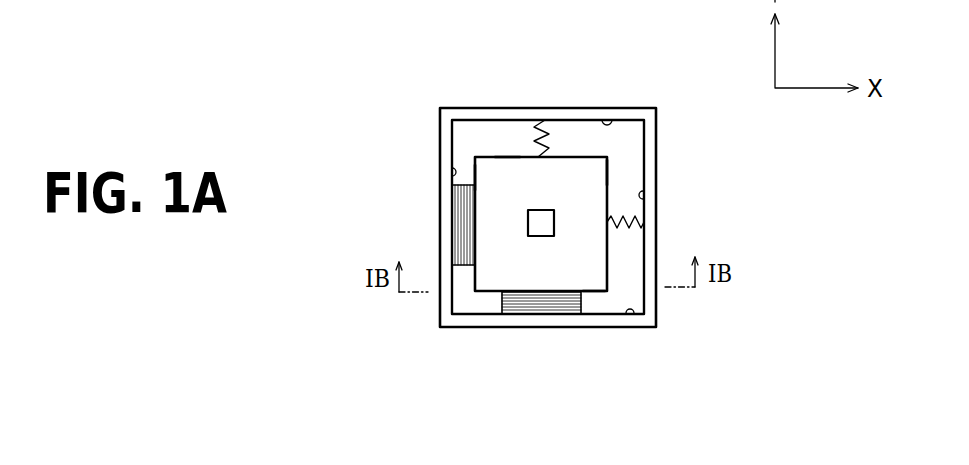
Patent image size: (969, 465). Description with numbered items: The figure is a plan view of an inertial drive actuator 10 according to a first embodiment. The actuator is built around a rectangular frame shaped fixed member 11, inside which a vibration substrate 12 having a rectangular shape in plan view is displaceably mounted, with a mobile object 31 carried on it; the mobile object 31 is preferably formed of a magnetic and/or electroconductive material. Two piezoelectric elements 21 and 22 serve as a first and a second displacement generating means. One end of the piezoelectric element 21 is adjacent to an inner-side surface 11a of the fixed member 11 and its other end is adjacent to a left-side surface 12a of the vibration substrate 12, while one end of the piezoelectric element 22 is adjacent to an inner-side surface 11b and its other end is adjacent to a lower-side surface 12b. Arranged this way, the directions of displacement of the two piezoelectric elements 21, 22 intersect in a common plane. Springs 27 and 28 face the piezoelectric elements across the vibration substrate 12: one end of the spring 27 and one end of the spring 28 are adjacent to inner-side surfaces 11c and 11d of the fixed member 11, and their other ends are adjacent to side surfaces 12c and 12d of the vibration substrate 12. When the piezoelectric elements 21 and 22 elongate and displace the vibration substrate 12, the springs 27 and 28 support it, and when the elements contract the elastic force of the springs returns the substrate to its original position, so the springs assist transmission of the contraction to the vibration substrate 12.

The inertial drive actuator 10 is at (560, 441).
The fixed member 11 is at (445, 137).
The inner-side surface 11a is at (452, 168).
The inner-side surface 11b is at (632, 316).
The inner-side surface 11c is at (612, 124).
The inner-side surface 11d is at (643, 195).
The vibration substrate 12 is at (488, 278).
The left-side surface 12a is at (475, 178).
The lower-side surface 12b is at (595, 292).
The side surface 12c is at (504, 157).
The side surface 12d is at (607, 170).
The piezoelectric element 21 is at (460, 232).
The piezoelectric element 22 is at (523, 303).
The spring 27 is at (546, 125).
The spring 28 is at (640, 220).
The mobile object 31 is at (543, 225).